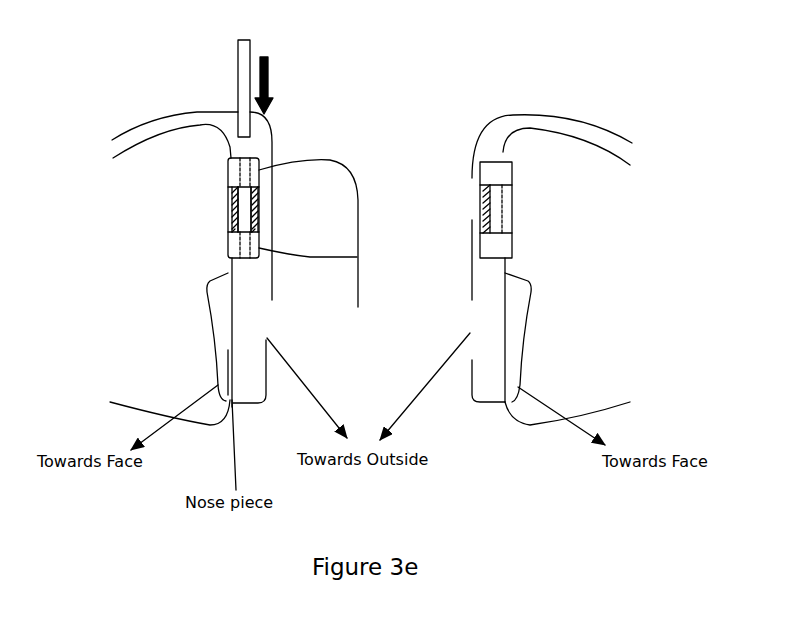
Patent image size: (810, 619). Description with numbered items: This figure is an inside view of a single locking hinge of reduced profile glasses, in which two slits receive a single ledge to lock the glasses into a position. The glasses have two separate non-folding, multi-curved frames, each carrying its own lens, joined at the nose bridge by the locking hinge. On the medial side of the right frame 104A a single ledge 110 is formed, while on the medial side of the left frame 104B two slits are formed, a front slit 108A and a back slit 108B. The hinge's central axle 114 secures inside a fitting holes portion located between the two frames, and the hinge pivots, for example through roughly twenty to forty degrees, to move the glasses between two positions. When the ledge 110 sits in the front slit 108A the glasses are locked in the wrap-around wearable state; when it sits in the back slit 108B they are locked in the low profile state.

The right frame 104A is at (503, 173).
The left frame 104B is at (228, 173).
The front slit 108A is at (255, 207).
The back slit 108B is at (232, 211).
The ledge 110 is at (480, 197).
The central axle 114 is at (250, 50).